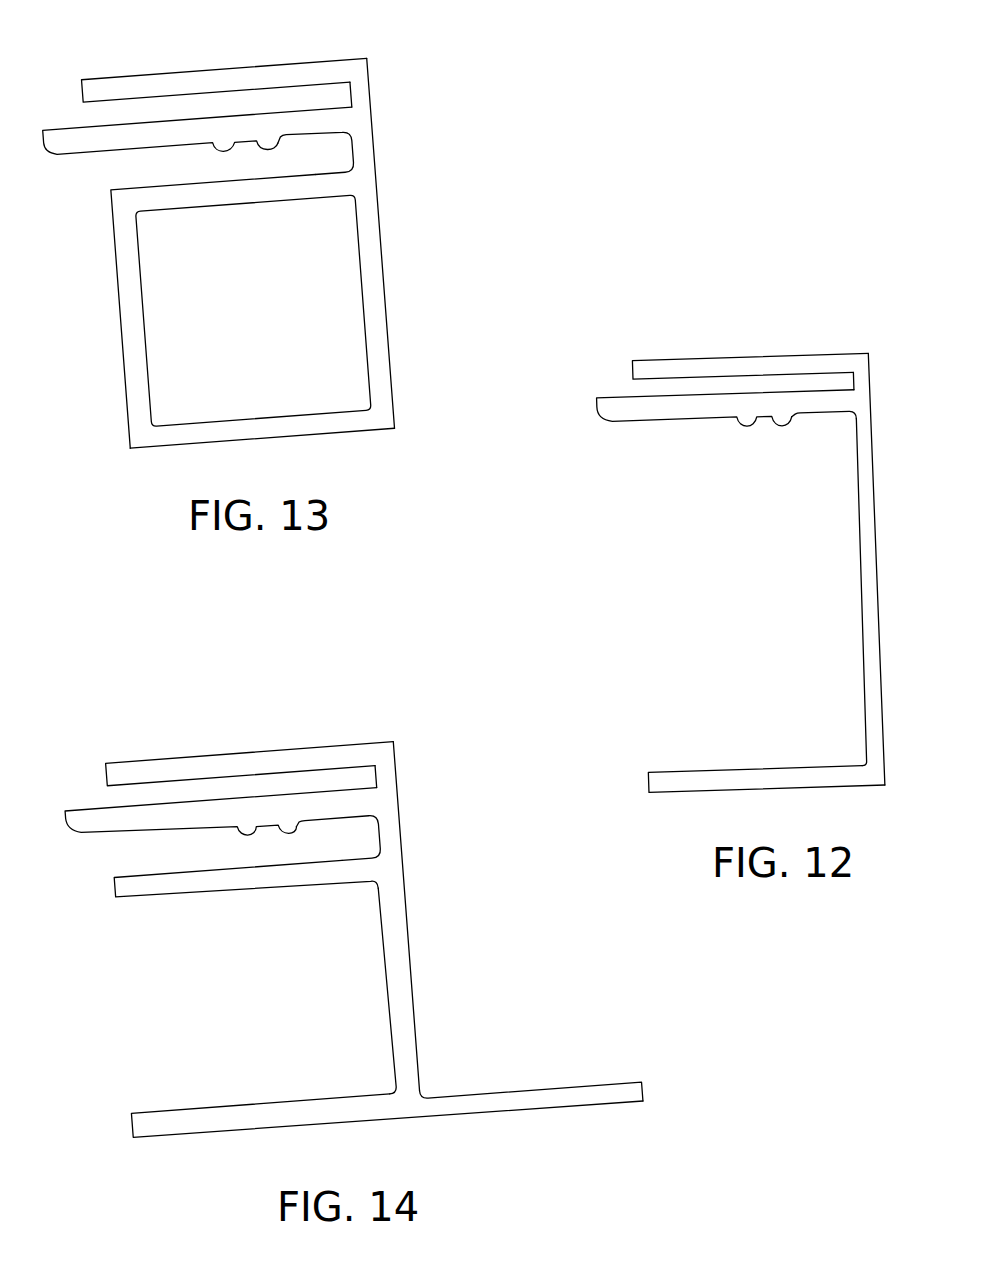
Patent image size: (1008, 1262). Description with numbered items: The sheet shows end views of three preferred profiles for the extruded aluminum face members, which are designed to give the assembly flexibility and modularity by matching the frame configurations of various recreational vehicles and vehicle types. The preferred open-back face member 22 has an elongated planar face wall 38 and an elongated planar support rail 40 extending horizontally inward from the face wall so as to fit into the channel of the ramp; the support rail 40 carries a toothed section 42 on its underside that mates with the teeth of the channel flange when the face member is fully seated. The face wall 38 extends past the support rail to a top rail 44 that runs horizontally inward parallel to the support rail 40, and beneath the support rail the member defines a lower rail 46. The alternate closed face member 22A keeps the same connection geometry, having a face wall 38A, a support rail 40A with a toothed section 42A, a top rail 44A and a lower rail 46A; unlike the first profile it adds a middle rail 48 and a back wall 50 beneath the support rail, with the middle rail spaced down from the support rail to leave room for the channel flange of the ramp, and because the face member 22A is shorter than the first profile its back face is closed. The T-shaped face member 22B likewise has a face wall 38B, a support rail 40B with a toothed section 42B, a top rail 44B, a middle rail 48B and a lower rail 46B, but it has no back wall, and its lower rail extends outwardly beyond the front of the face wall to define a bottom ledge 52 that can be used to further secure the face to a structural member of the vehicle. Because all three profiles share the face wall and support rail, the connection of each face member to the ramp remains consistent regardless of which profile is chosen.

In FIG. 12, the face member 22 is at (698, 333).
In FIG. 13, the face member 22A is at (357, 35).
In FIG. 14, the face member 22B is at (293, 722).
In FIG. 12, the face wall 38 is at (877, 675).
In FIG. 13, the face wall 38A is at (383, 306).
In FIG. 14, the face wall 38B is at (405, 981).
In FIG. 12, the support rail 40 is at (652, 413).
In FIG. 13, the support rail 40A is at (110, 145).
In FIG. 14, the support rail 40B is at (97, 830).
In FIG. 12, the toothed section 42 is at (783, 420).
In FIG. 13, the toothed section 42A is at (278, 150).
In FIG. 14, the toothed section 42B is at (300, 833).
In FIG. 12, the top rail 44 is at (731, 360).
In FIG. 13, the top rail 44A is at (160, 74).
In FIG. 14, the top rail 44B is at (148, 758).
In FIG. 12, the lower rail 46 is at (698, 785).
In FIG. 13, the lower rail 46A is at (265, 437).
In FIG. 14, the lower rail 46B is at (230, 1125).
In FIG. 13, the middle rail 48 is at (124, 367).
In FIG. 14, the middle rail 48B is at (225, 890).
In FIG. 13, the back wall 50 is at (214, 200).
In FIG. 14, the bottom ledge 52 is at (497, 1091).